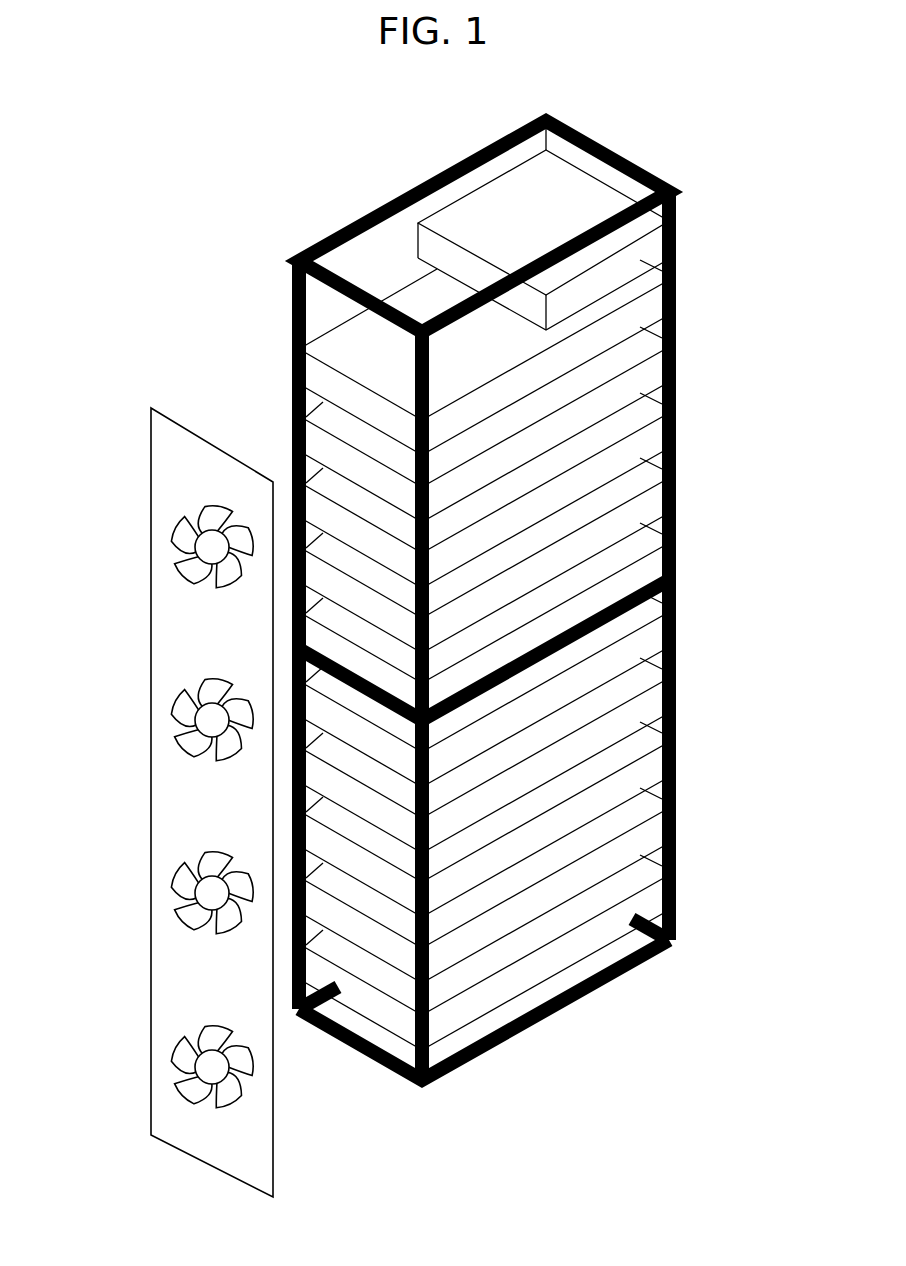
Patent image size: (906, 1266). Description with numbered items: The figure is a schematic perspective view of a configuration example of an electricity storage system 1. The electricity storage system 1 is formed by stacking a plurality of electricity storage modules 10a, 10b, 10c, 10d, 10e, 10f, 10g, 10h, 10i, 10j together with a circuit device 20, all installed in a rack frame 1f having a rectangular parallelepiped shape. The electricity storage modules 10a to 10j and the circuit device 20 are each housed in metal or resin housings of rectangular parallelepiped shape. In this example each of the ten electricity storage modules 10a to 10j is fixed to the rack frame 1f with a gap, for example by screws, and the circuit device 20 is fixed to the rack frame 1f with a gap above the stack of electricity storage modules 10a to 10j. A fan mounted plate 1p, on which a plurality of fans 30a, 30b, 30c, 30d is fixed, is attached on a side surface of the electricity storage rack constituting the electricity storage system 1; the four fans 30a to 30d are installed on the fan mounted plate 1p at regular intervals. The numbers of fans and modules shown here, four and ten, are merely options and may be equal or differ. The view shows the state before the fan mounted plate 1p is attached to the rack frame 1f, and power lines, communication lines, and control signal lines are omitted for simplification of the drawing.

The electricity storage system 1 is at (436, 118).
The rack frame 1f is at (338, 234).
The fan mounted plate 1p is at (211, 443).
The circuit device 20 is at (648, 243).
The electricity storage module 10a is at (648, 305).
The electricity storage module 10b is at (648, 368).
The electricity storage module 10c is at (648, 432).
The electricity storage module 10d is at (648, 497).
The electricity storage module 10e is at (648, 560).
The electricity storage module 10f is at (648, 633).
The electricity storage module 10g is at (648, 695).
The electricity storage module 10h is at (648, 758).
The electricity storage module 10i is at (648, 822).
The electricity storage module 10j is at (648, 885).
The fan 30a is at (172, 547).
The fan 30b is at (172, 720).
The fan 30c is at (172, 893).
The fan 30d is at (172, 1067).